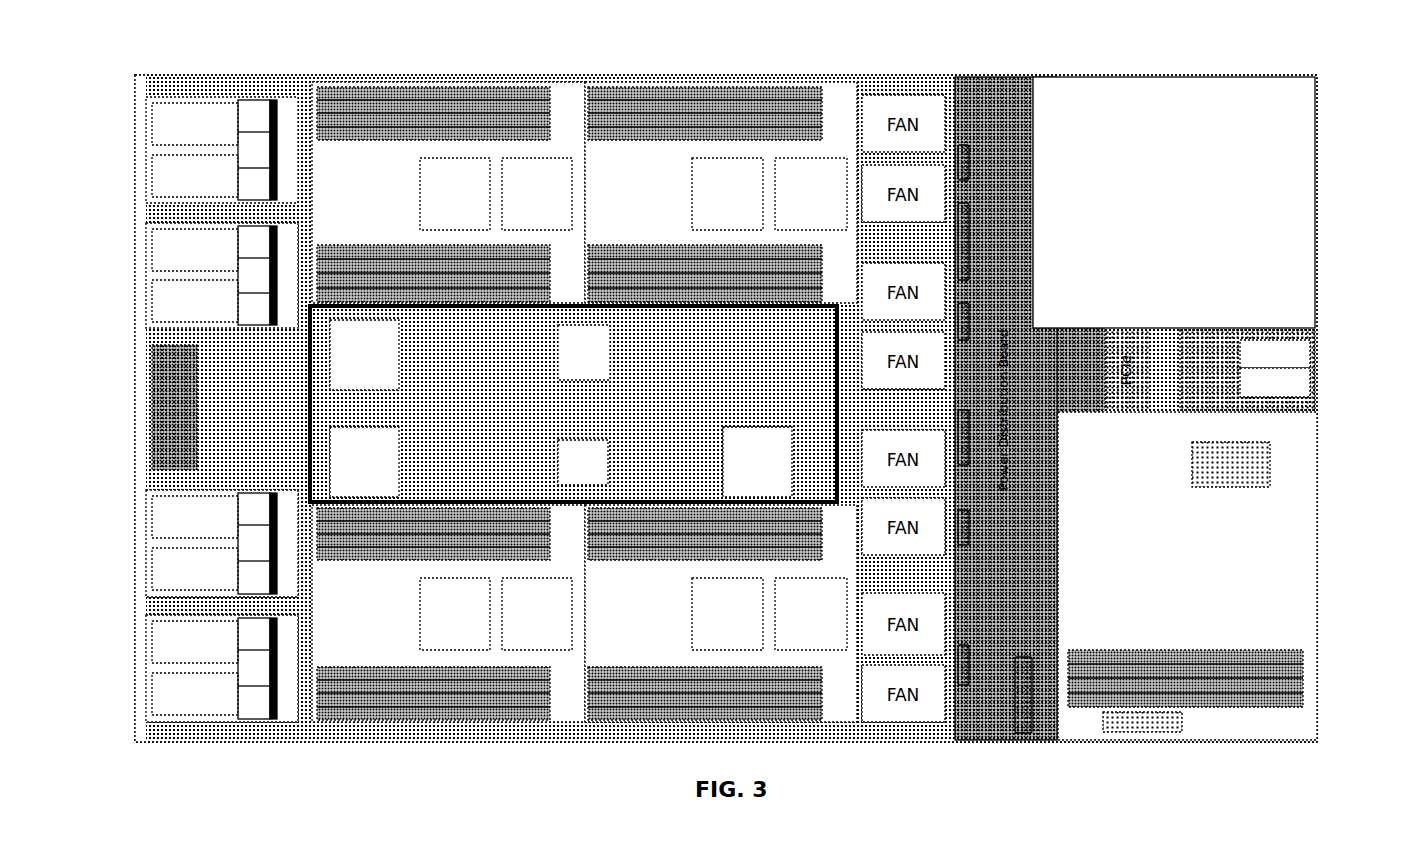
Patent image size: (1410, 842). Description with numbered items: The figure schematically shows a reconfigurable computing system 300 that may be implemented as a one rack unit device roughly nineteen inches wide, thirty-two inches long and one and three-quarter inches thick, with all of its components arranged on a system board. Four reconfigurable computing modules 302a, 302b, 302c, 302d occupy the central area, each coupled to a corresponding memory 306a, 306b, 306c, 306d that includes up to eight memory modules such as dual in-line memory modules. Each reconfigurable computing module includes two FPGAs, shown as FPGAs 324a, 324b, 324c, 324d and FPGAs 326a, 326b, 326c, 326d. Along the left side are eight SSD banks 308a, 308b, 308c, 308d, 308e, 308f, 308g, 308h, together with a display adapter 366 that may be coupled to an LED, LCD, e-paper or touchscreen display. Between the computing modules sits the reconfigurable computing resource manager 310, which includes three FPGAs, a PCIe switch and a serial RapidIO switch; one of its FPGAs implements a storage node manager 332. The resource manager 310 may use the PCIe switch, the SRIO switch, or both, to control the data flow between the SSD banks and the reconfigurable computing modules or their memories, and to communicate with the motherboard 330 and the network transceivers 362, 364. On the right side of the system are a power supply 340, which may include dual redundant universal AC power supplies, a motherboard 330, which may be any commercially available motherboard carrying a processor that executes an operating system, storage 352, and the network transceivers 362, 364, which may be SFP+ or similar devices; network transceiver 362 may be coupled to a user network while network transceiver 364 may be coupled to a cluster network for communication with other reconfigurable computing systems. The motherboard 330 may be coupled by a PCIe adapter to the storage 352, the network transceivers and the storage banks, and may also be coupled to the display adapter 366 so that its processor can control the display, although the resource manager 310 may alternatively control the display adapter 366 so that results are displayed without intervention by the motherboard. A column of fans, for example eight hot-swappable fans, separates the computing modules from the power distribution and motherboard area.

The reconfigurable computing system 300 is at (726, 382).
The reconfigurable computing module 302a is at (448, 192).
The reconfigurable computing module 302b is at (721, 192).
The reconfigurable computing module 302c is at (448, 613).
The reconfigurable computing module 302d is at (721, 613).
The memory 306a is at (407, 272).
The memory 306b is at (683, 272).
The memory 306c is at (407, 695).
The memory 306d is at (683, 695).
The SSD bank 308a is at (150, 121).
The SSD bank 308b is at (150, 178).
The SSD bank 308c is at (150, 239).
The SSD bank 308d is at (150, 299).
The SSD bank 308e is at (150, 514).
The SSD bank 308f is at (150, 569).
The SSD bank 308g is at (150, 636).
The SSD bank 308h is at (150, 694).
The reconfigurable computing resource manager 310 is at (573, 404).
The FPGA 324a is at (455, 194).
The FPGA 324b is at (727, 194).
The FPGA 324c is at (455, 614).
The FPGA 324d is at (727, 614).
The FPGA 326a is at (537, 194).
The FPGA 326b is at (811, 194).
The FPGA 326c is at (537, 614).
The FPGA 326d is at (811, 614).
The motherboard 330 is at (1187, 576).
The storage node manager 332 is at (372, 483).
The power supply 340 is at (1174, 202).
The storage 352 is at (1225, 355).
The network transceiver 362 is at (1312, 358).
The network transceiver 364 is at (1312, 390).
The display adapter 366 is at (197, 410).